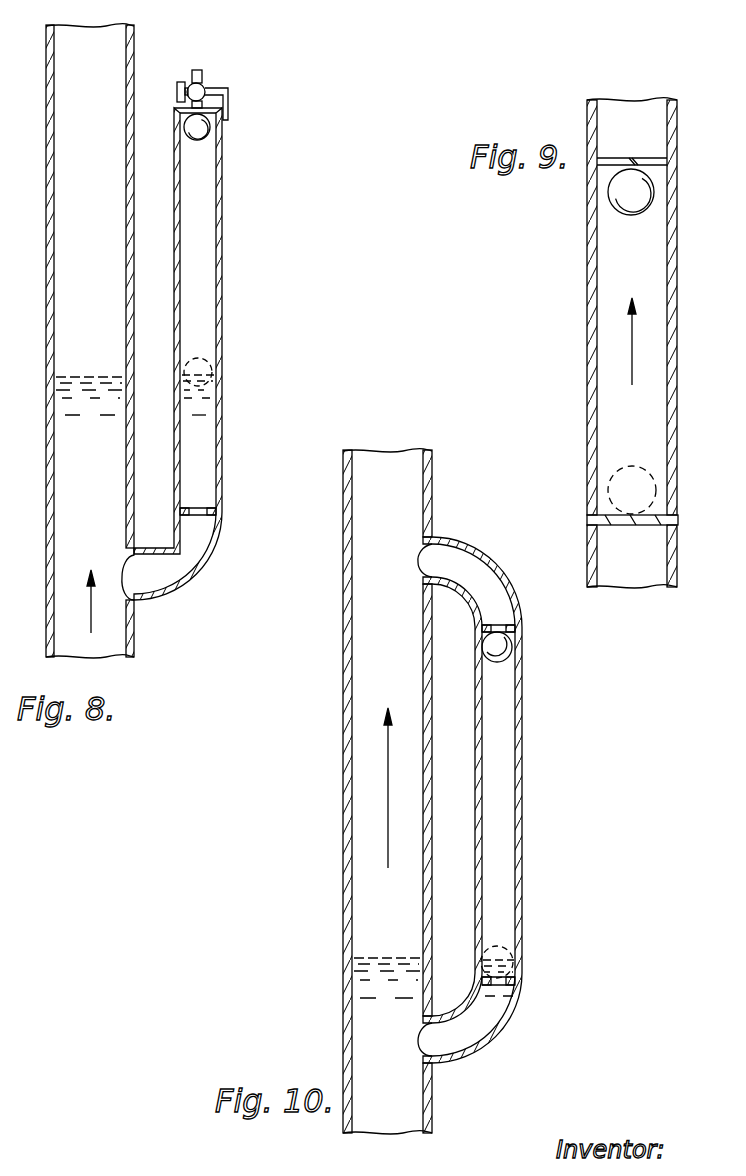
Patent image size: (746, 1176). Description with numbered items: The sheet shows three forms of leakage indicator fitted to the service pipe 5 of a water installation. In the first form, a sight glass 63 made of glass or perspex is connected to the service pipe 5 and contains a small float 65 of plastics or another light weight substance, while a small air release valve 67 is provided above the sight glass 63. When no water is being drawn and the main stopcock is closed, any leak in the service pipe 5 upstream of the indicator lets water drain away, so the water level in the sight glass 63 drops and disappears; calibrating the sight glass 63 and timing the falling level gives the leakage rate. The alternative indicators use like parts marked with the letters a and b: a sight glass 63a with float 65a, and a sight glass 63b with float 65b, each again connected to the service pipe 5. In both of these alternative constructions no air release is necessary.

In FIG. 8, the service pipe 5 is at (47, 481).
In FIG. 9, the service pipe 5 is at (678, 533).
In FIG. 10, the service pipe 5 is at (432, 1097).
In FIG. 8, the sight glass 63 is at (222, 263).
In FIG. 9, the sight glass 63a is at (590, 298).
In FIG. 10, the sight glass 63b is at (522, 835).
In FIG. 8, the float 65 is at (206, 358).
In FIG. 9, the float 65a is at (612, 190).
In FIG. 10, the float 65b is at (512, 645).
In FIG. 8, the air release valve 67 is at (228, 92).